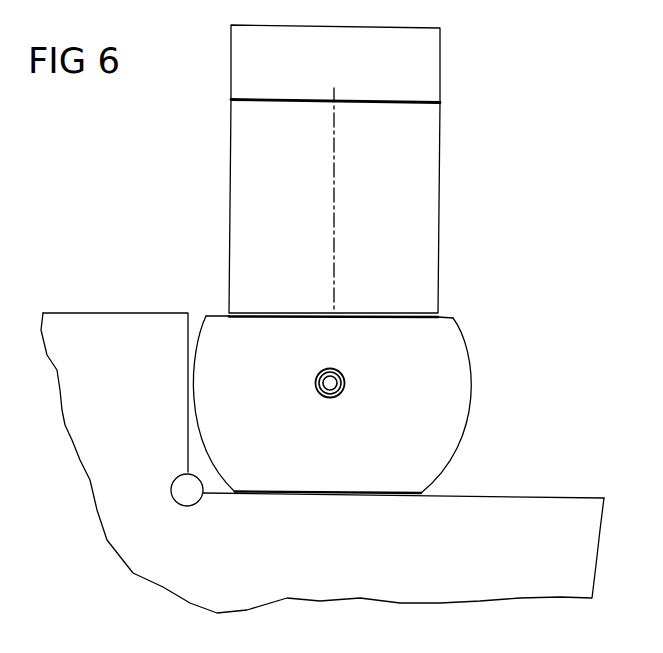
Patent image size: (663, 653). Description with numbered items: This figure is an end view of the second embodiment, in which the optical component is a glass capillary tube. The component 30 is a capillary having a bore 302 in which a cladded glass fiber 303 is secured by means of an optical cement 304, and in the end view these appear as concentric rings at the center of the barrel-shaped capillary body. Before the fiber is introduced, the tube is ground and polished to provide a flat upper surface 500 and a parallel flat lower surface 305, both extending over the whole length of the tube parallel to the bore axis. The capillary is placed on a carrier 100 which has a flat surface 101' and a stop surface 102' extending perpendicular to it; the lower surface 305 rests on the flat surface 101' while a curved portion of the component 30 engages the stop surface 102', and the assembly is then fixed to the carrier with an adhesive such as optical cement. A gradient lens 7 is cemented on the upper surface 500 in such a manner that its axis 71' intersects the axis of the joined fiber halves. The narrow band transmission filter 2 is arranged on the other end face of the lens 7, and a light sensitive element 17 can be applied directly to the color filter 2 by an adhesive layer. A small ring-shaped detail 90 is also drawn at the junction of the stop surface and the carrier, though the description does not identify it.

The light sensitive element 17 is at (245, 52).
The narrow band transmission filter 2 is at (252, 99).
The gradient lens 7 is at (248, 146).
The axis of the gradient lens 71' is at (354, 200).
The upper surface 500 is at (444, 315).
The component 30 is at (448, 352).
The bore 302 is at (332, 369).
The cladded glass fiber 303 is at (320, 397).
The optical cement 304 is at (339, 396).
The lower parallel surface 305 is at (296, 492).
The stop surface 102' is at (117, 375).
The sealing ring 90 is at (205, 473).
The flat surface 101' is at (403, 480).
The carrier 100 is at (466, 563).